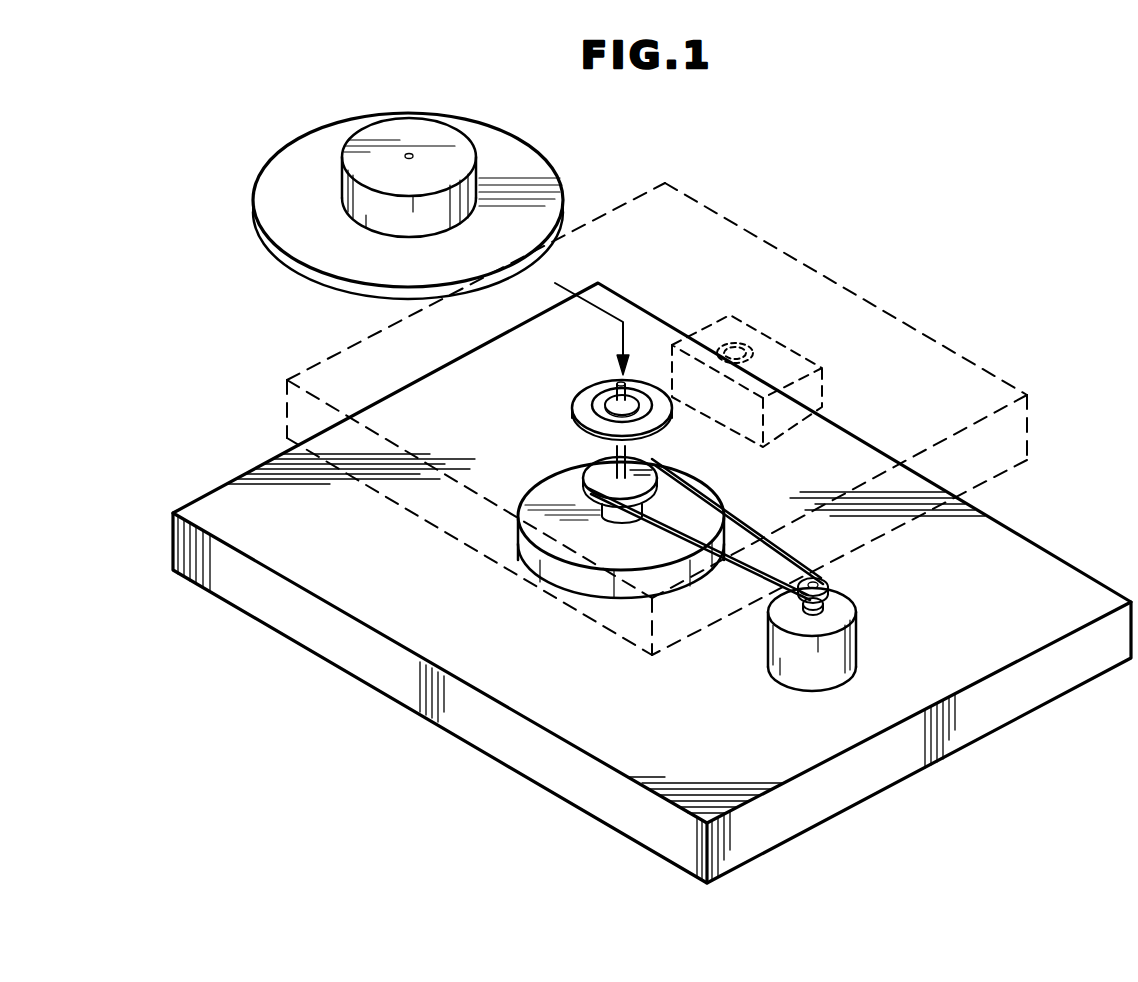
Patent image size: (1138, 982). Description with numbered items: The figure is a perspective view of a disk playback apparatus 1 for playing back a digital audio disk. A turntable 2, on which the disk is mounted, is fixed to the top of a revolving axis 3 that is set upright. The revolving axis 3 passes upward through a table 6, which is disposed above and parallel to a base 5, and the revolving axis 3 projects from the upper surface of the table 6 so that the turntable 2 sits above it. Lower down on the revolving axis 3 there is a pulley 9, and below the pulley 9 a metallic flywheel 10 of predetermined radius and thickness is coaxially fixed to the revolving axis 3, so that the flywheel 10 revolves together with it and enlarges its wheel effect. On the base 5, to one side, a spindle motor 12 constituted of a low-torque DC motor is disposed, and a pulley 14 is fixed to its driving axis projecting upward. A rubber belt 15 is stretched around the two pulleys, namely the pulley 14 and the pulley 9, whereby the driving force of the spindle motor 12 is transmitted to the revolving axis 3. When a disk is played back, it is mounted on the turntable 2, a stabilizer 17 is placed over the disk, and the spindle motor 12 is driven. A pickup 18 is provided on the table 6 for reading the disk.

The disk playback apparatus 1 is at (1002, 298).
The turntable 2 is at (572, 413).
The revolving axis 3 is at (613, 395).
The base 5 is at (452, 735).
The table 6 is at (759, 236).
The pulley 9 is at (588, 480).
The flywheel 10 is at (530, 563).
The spindle motor 12 is at (860, 651).
The pulley 14 is at (822, 582).
The rubber belt 15 is at (672, 537).
The stabilizer 17 is at (258, 237).
The pickup 18 is at (745, 342).